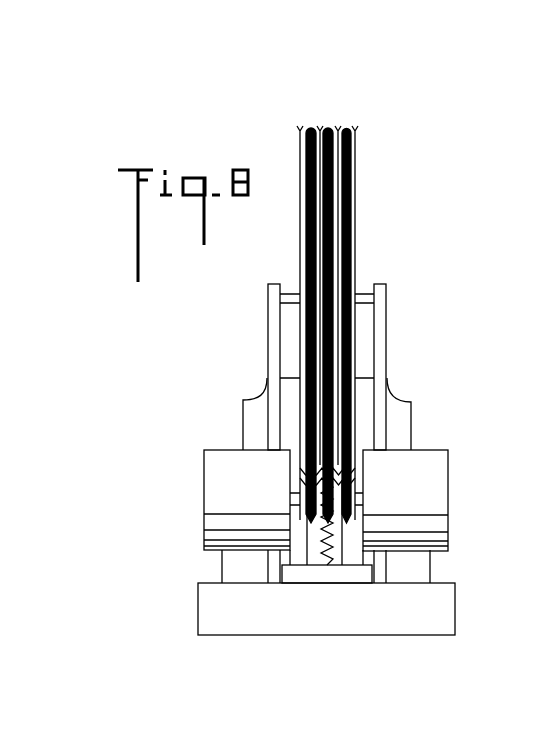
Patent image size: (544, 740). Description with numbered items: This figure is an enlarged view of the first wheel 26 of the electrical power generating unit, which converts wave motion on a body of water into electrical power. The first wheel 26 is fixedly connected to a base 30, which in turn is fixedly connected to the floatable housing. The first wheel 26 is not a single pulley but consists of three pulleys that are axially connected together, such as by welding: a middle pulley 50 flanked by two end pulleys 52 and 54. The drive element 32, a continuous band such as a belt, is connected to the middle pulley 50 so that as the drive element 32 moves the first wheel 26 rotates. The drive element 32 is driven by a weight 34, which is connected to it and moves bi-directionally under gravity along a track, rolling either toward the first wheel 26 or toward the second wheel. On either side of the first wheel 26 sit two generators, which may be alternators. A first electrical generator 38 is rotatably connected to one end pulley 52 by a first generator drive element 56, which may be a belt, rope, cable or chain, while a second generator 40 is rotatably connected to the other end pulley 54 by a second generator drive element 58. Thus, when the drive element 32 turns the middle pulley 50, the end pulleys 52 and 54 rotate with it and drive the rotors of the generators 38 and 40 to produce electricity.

The first wheel 26 is at (335, 287).
The base 30 is at (440, 615).
The drive element 32 is at (334, 135).
The weight 34 is at (397, 422).
The electrical generator 38 is at (428, 490).
The second generator 40 is at (228, 481).
The middle pulley 50 is at (325, 133).
The end pulley 52 is at (352, 136).
The end pulley 54 is at (303, 136).
The first generator drive element 56 is at (347, 265).
The second generator drive element 58 is at (307, 265).